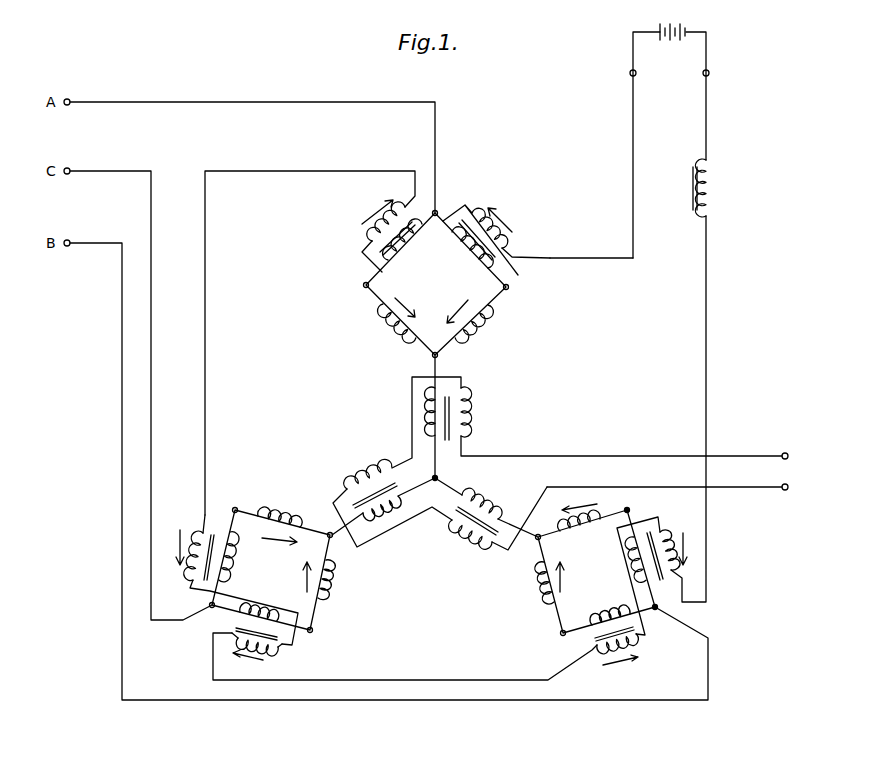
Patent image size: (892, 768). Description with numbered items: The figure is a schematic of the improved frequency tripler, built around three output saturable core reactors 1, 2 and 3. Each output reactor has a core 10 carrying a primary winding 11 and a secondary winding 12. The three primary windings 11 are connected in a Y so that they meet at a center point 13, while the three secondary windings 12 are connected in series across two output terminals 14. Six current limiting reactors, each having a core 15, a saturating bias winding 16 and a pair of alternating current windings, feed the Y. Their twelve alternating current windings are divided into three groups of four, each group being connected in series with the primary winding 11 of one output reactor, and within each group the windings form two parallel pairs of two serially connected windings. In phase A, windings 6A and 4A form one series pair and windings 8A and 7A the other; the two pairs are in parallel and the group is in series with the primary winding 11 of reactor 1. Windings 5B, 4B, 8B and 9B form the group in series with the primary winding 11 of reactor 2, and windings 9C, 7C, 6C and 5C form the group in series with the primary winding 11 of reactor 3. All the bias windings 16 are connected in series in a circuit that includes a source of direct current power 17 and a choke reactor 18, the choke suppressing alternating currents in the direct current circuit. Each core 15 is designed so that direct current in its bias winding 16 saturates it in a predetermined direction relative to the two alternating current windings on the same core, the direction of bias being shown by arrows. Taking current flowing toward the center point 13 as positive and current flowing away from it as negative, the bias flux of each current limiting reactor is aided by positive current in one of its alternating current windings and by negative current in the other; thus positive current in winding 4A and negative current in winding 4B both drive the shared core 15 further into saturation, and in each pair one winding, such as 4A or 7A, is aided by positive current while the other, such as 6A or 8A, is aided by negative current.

The output saturable core reactor 1 is at (439, 422).
The output saturable core reactor 2 is at (479, 507).
The output saturable core reactor 3 is at (373, 481).
The alternating current winding 4A is at (388, 317).
The alternating current winding 6A is at (413, 247).
The alternating current winding 7A is at (482, 322).
The alternating current winding 8A is at (468, 257).
The alternating current winding 4B is at (637, 562).
The alternating current winding 5B is at (600, 517).
The alternating current winding 8B is at (543, 592).
The alternating current winding 9B is at (610, 617).
The alternating current winding 5C is at (260, 617).
The alternating current winding 6C is at (325, 590).
The alternating current winding 7C is at (233, 558).
The alternating current winding 9C is at (277, 513).
The core 10 is at (463, 398).
The primary winding 11 is at (428, 406).
The secondary winding 12 is at (470, 432).
The center point 13 is at (437, 477).
The output terminals 14 is at (789, 458).
The core 15 is at (362, 252).
The saturating bias winding 16 is at (373, 230).
The source of direct current power 17 is at (674, 46).
The choke reactor 18 is at (712, 184).